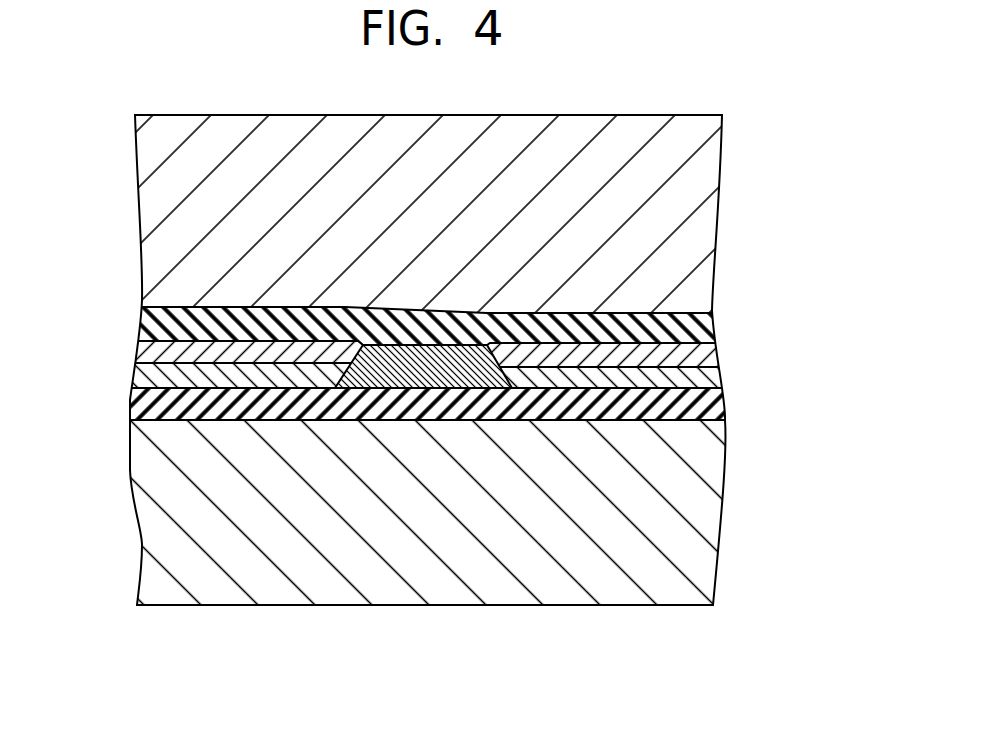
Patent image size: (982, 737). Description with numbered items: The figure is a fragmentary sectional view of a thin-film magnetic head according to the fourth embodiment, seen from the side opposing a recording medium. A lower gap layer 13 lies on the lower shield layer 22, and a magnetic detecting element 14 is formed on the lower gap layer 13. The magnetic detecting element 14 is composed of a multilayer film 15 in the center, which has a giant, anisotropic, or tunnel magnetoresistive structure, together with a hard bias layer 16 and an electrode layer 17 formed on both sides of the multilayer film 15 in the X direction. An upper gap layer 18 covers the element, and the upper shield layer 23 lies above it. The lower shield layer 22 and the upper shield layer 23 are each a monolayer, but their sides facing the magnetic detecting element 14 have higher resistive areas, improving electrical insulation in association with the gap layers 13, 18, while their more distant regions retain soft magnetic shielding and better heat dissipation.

The lower gap layer 13 is at (700, 422).
The magnetic detecting element 14 is at (460, 378).
The multilayer film 15 is at (408, 372).
The hard bias layer 16 is at (138, 377).
The electrode layer 17 is at (138, 349).
The upper gap layer 18 is at (703, 318).
The lower shield layer 22 is at (697, 510).
The upper shield layer 23 is at (703, 171).